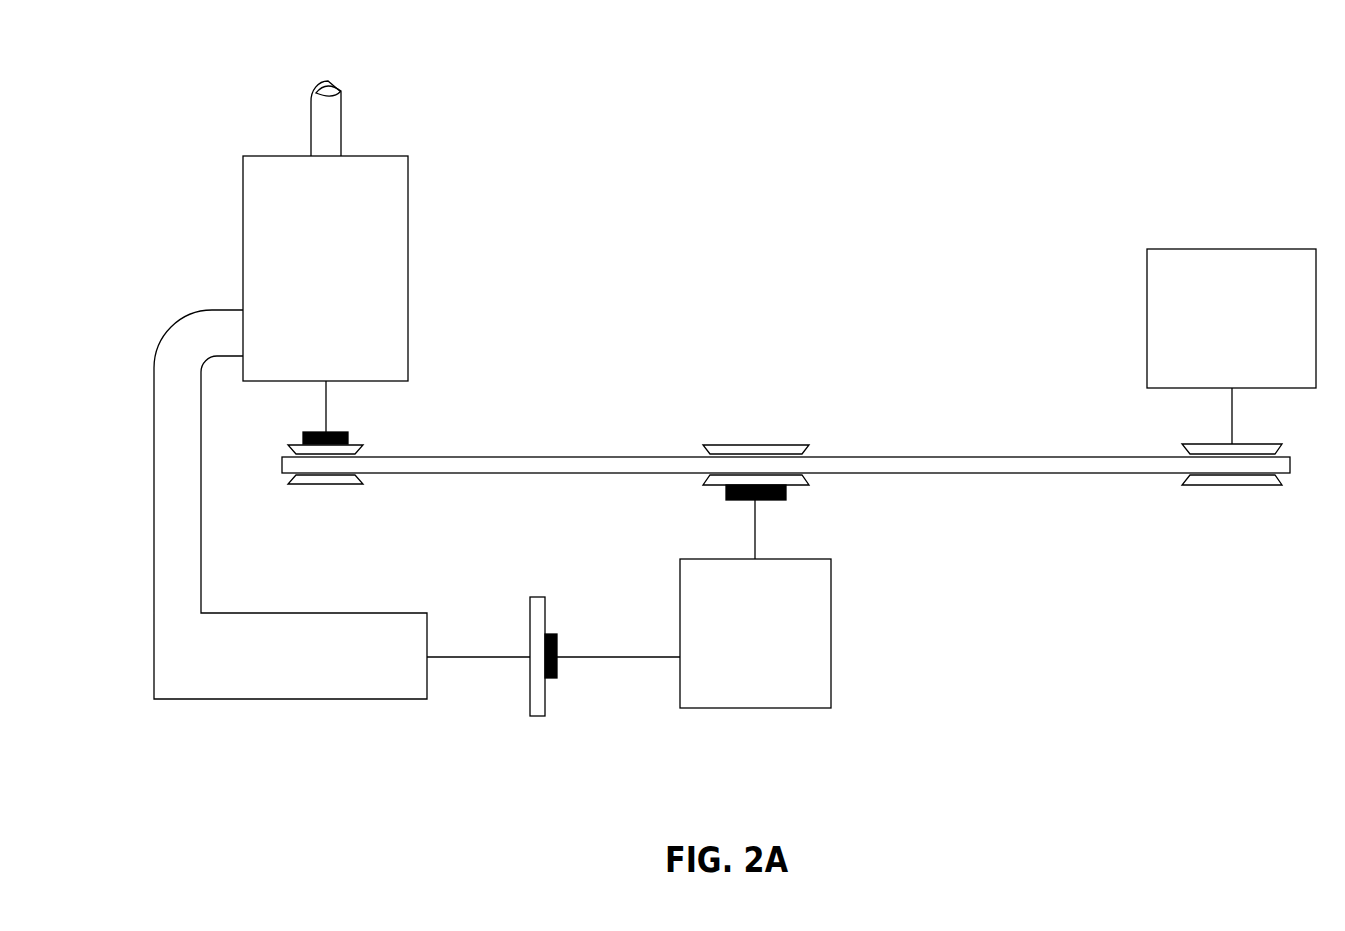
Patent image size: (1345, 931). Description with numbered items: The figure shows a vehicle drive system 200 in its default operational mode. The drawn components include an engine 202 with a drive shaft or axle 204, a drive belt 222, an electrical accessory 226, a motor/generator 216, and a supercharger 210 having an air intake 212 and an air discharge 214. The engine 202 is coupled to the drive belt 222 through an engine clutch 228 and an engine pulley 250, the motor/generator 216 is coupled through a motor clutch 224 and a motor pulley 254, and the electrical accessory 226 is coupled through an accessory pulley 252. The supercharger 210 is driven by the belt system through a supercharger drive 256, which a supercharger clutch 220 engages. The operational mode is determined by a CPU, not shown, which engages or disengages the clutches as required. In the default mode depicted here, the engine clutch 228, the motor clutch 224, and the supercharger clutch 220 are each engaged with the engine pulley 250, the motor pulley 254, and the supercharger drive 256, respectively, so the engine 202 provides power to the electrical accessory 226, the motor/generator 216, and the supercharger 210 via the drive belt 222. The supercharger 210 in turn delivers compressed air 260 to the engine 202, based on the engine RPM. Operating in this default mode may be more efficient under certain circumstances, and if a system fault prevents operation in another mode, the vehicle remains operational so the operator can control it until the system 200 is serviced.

The vehicle drive system 200 is at (967, 155).
The engine 202 is at (325, 268).
The drive shaft or axle 204 is at (330, 118).
The supercharger 210 is at (314, 672).
The air intake 212 is at (192, 700).
The air discharge 214 is at (233, 318).
The motor/generator 216 is at (755, 633).
The supercharger clutch 220 is at (550, 634).
The drive belt 222 is at (552, 458).
The motor clutch 224 is at (783, 498).
The electrical accessory 226 is at (1231, 318).
The engine clutch 228 is at (345, 432).
The engine pulley 250 is at (335, 478).
The accessory pulley 252 is at (1267, 477).
The motor pulley 254 is at (767, 450).
The supercharger drive 256 is at (537, 705).
The compressed air 260 is at (177, 453).